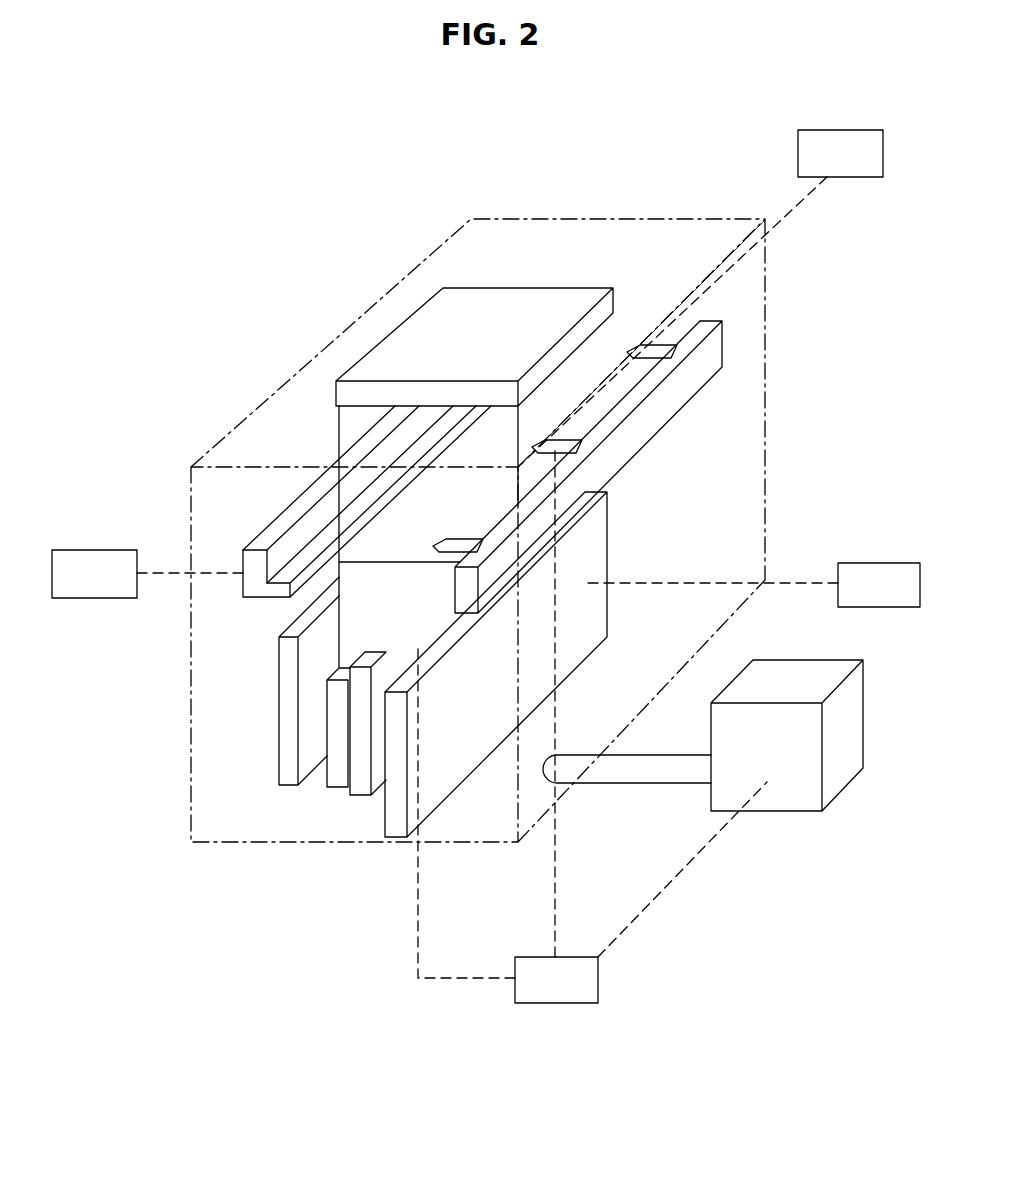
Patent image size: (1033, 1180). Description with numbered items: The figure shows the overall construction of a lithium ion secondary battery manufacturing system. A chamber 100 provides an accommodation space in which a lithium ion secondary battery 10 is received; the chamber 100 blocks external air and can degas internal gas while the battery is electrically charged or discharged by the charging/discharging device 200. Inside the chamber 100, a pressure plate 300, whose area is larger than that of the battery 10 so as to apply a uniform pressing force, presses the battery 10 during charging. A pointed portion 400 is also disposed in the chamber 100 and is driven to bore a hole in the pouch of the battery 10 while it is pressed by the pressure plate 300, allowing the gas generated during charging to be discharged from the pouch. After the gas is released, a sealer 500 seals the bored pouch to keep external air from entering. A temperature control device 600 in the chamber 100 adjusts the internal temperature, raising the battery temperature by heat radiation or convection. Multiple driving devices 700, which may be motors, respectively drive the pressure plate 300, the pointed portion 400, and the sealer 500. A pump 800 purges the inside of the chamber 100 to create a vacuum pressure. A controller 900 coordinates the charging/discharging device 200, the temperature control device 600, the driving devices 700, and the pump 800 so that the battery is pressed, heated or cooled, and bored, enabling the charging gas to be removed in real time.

The lithium ion secondary battery 10 is at (358, 707).
The chamber 100 is at (612, 218).
The charging/discharging device 200 is at (237, 752).
The pressure plate 300 is at (458, 762).
The pointed portion 400 is at (558, 447).
The sealer 500 is at (287, 518).
The temperature control device 600 is at (427, 327).
The driving devices 700 is at (486, 368).
The pump 800 is at (798, 798).
The controller 900 is at (592, 724).